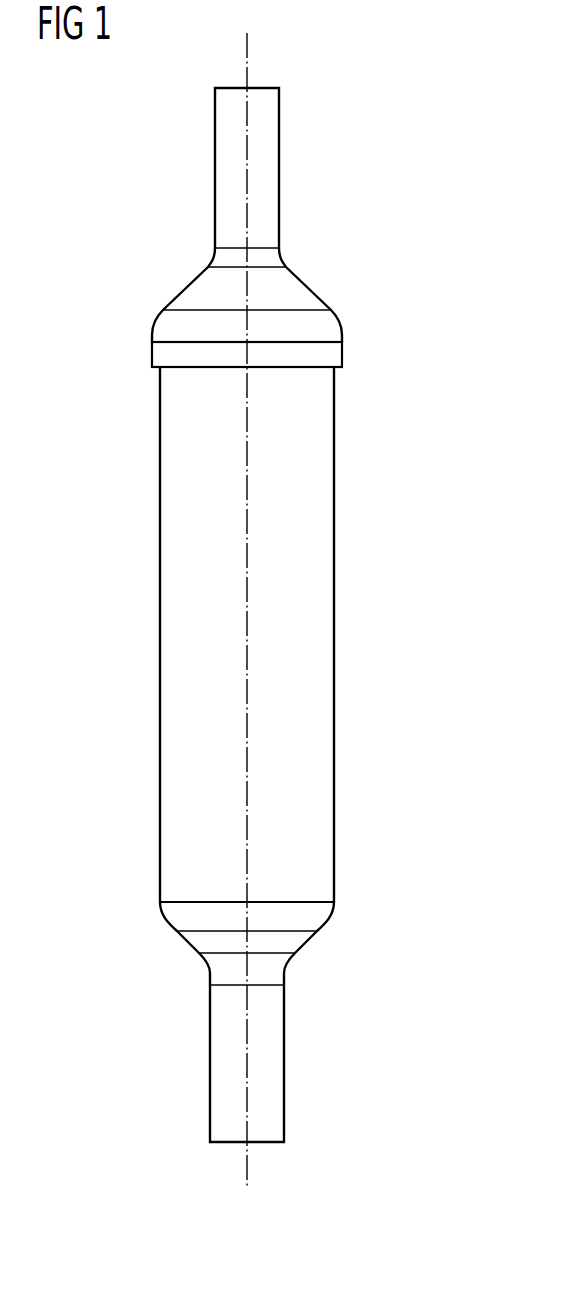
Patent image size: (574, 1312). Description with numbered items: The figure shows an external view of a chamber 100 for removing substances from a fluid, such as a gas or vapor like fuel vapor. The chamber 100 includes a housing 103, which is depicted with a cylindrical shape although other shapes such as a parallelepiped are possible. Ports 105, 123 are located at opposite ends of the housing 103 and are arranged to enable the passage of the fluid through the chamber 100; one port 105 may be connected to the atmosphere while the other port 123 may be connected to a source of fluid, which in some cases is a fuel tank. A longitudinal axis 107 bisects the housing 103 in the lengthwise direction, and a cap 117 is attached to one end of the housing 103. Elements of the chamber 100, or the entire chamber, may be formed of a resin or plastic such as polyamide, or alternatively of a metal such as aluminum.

The chamber 100 is at (460, 158).
The housing 103 is at (334, 540).
The port 105 is at (272, 88).
The longitudinal axis 107 is at (247, 437).
The cap 117 is at (313, 287).
The port 123 is at (277, 1142).